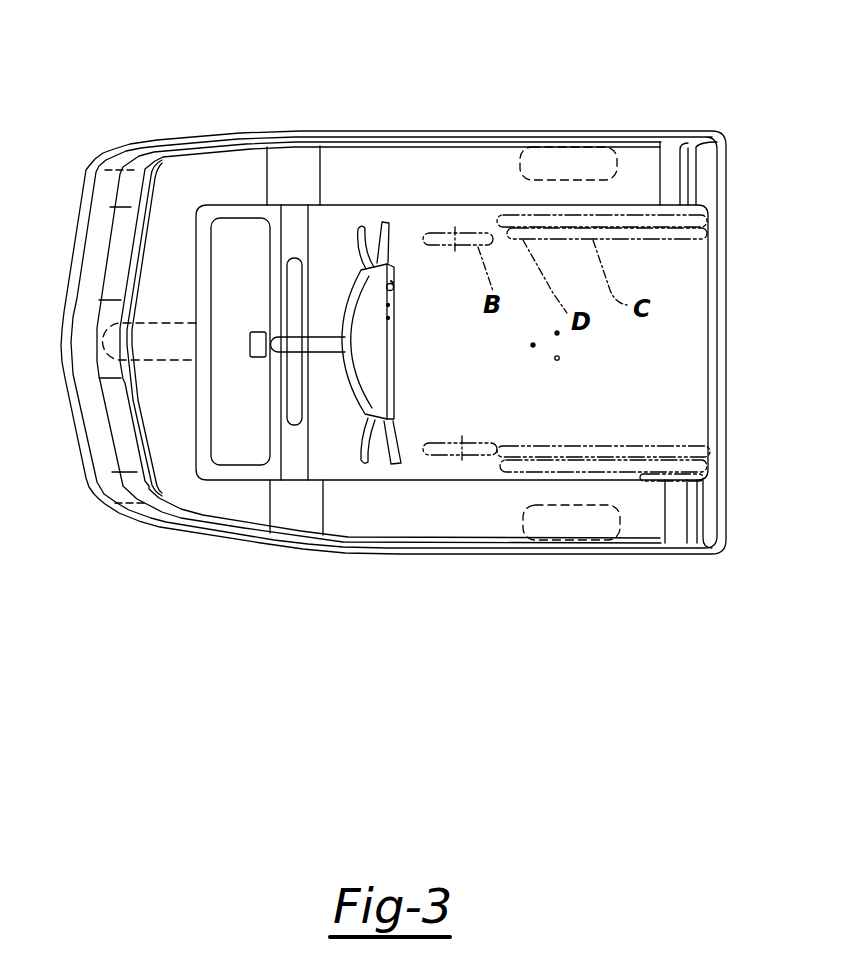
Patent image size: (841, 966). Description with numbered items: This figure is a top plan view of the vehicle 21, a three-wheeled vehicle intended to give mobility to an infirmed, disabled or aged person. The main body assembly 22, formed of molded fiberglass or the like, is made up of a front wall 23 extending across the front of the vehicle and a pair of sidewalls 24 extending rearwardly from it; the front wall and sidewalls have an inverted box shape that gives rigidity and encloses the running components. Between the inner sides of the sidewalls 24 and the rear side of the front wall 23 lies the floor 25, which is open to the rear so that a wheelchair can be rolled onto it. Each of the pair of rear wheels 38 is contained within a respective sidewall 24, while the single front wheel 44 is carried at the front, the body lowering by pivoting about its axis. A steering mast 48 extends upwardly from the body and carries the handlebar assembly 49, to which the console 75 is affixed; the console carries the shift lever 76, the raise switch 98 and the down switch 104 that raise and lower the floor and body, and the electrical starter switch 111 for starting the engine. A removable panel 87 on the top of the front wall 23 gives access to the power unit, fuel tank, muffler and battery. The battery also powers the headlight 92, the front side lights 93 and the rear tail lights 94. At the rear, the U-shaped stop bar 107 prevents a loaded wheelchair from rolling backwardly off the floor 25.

The vehicle 21 is at (573, 110).
The main body assembly 22 is at (476, 131).
The front wall 23 is at (227, 541).
The sidewalls 24 is at (513, 140).
The floor 25 is at (636, 361).
The rear wheels 38 is at (620, 147).
The front wheel 44 is at (100, 357).
The steering mast 48 is at (322, 335).
The handlebar assembly 49 is at (400, 428).
The console 75 is at (355, 400).
The shift lever 76 is at (396, 289).
The removable panel 87 is at (212, 443).
The headlight 92 is at (99, 313).
The front side lights 93 is at (121, 190).
The rear tail lights 94 is at (693, 187).
The up or raise switch 98 is at (391, 306).
The down switch 104 is at (391, 320).
The stop bar 107 is at (715, 315).
The electrical starter switch 111 is at (393, 282).